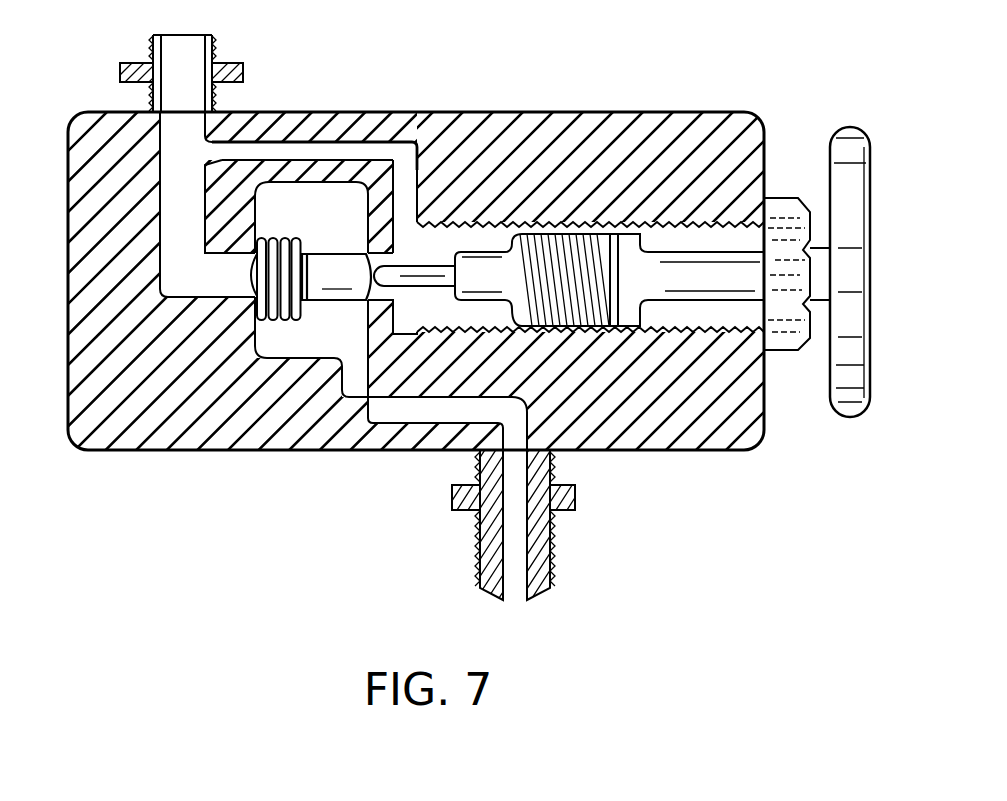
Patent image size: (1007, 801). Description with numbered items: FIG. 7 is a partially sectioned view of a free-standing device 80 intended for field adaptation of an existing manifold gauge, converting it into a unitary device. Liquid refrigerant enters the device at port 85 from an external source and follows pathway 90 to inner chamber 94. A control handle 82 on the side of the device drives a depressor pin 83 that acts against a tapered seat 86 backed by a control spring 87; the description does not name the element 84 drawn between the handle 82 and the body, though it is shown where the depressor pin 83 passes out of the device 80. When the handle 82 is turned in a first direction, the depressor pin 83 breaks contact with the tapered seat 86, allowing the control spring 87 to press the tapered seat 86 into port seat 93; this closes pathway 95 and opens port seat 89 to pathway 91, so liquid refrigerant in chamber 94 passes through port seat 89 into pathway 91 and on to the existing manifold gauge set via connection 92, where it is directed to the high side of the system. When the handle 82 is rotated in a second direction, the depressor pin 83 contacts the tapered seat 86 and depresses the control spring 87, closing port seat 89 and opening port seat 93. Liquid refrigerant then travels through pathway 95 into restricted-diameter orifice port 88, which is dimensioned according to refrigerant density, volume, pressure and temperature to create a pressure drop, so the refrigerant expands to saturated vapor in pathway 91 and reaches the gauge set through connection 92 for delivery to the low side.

The free-standing device 80 is at (720, 79).
The control handle 82 is at (864, 183).
The depressor pin 83 is at (592, 328).
The nut 84 is at (458, 298).
The port 85 is at (478, 563).
The tapered seat 86 is at (350, 290).
The control spring 87 is at (262, 302).
The restricted-diameter orifice port 88 is at (343, 158).
The port seat 89 is at (290, 245).
The pathway 90 is at (403, 410).
The pathway 91 is at (178, 162).
The connection 92 is at (120, 72).
The port seat 93 is at (380, 257).
The inner chamber 94 is at (348, 200).
The pathway 95 is at (404, 198).